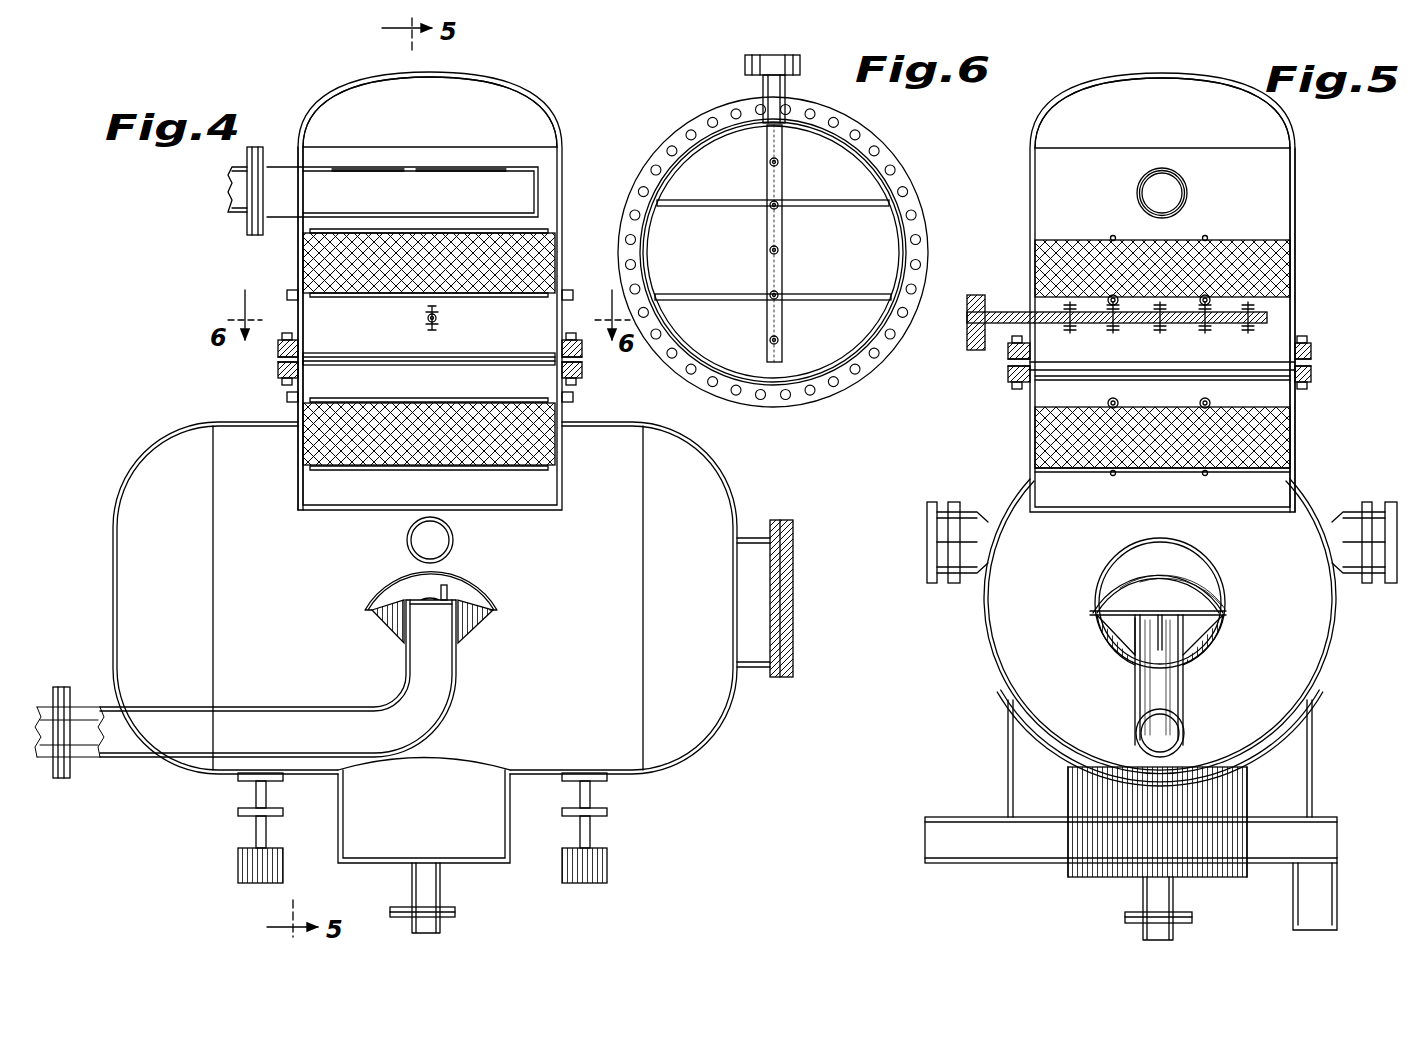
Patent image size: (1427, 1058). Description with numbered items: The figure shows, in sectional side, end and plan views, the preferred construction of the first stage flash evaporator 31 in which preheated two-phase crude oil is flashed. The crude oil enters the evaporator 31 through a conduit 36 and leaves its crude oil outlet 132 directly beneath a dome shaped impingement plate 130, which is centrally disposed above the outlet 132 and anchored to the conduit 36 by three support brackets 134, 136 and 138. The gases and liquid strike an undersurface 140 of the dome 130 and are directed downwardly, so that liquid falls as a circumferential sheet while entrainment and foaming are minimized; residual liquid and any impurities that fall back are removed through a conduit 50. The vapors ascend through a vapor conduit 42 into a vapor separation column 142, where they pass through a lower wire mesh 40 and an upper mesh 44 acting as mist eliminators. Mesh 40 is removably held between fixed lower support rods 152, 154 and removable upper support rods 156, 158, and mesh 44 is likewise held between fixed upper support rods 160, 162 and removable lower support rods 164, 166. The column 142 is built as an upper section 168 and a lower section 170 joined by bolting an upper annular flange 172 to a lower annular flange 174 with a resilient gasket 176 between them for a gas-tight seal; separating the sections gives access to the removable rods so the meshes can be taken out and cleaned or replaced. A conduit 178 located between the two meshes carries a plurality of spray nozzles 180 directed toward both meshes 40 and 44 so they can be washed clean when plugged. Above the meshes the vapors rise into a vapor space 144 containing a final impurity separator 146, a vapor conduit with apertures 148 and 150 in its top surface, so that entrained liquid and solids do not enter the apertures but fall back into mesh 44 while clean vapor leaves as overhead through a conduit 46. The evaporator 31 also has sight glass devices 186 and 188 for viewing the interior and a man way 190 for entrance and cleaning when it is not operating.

In FIG. 4, the first stage flash evaporator 31 is at (697, 774).
In FIG. 5, the first stage flash evaporator 31 is at (990, 666).
In FIG. 4, the conduit 36 is at (125, 760).
In FIG. 5, the conduit 36 is at (1135, 724).
In FIG. 4, the wire mesh 40 is at (320, 440).
In FIG. 5, the wire mesh 40 is at (1045, 440).
In FIG. 4, the vapor conduit 42 is at (545, 310).
In FIG. 5, the vapor conduit 42 is at (1040, 386).
In FIG. 4, the mesh 44 is at (535, 264).
In FIG. 5, the mesh 44 is at (1275, 252).
In FIG. 4, the conduit 46 is at (235, 215).
In FIG. 4, the conduit 50 is at (445, 926).
In FIG. 5, the conduit 50 is at (1145, 930).
In FIG. 4, the dome shaped impingement plate 130 is at (388, 598).
In FIG. 5, the dome shaped impingement plate 130 is at (1120, 596).
In FIG. 4, the crude oil outlet 132 is at (452, 590).
In FIG. 4, the support bracket 134 is at (382, 624).
In FIG. 5, the support bracket 134 is at (1155, 645).
In FIG. 4, the support bracket 136 is at (462, 618).
In FIG. 5, the support bracket 136 is at (1122, 626).
In FIG. 5, the support bracket 138 is at (1195, 645).
In FIG. 4, the undersurface 140 is at (437, 580).
In FIG. 4, the vapor separation column 142 is at (548, 98).
In FIG. 5, the vapor separation column 142 is at (1300, 138).
In FIG. 6, the vapor separation column 142 is at (707, 128).
In FIG. 4, the vapor space 144 is at (475, 80).
In FIG. 5, the vapor space 144 is at (1122, 98).
In FIG. 4, the final impurity separator 146 is at (295, 167).
In FIG. 5, the final impurity separator 146 is at (1138, 176).
In FIG. 4, the aperture 148 is at (370, 170).
In FIG. 5, the aperture 148 is at (1172, 170).
In FIG. 4, the aperture 150 is at (465, 170).
In FIG. 4, the fixed lower support rod 152 is at (548, 470).
In FIG. 5, the fixed lower support rod 152 is at (1113, 476).
In FIG. 5, the fixed lower support rod 154 is at (1205, 476).
In FIG. 4, the removable upper support rod 156 is at (570, 398).
In FIG. 5, the removable upper support rod 156 is at (1108, 400).
In FIG. 6, the removable upper support rod 156 is at (855, 205).
In FIG. 5, the removable upper support rod 158 is at (1210, 400).
In FIG. 6, the removable upper support rod 158 is at (872, 302).
In FIG. 4, the fixed upper support rod 160 is at (545, 231).
In FIG. 5, the fixed upper support rod 160 is at (1115, 236).
In FIG. 5, the fixed upper support rod 162 is at (1206, 236).
In FIG. 4, the removable lower support rod 164 is at (292, 300).
In FIG. 5, the removable lower support rod 164 is at (1108, 298).
In FIG. 5, the removable lower support rod 166 is at (1210, 300).
In FIG. 4, the upper section 168 is at (298, 230).
In FIG. 5, the upper section 168 is at (1300, 200).
In FIG. 6, the upper section 168 is at (748, 385).
In FIG. 4, the lower section 170 is at (575, 425).
In FIG. 5, the lower section 170 is at (1295, 444).
In FIG. 4, the upper annular flange 172 is at (276, 348).
In FIG. 5, the upper annular flange 172 is at (1312, 350).
In FIG. 6, the upper annular flange 172 is at (822, 388).
In FIG. 4, the lower annular flange 174 is at (278, 380).
In FIG. 5, the lower annular flange 174 is at (1312, 372).
In FIG. 4, the resilient gasket 176 is at (276, 365).
In FIG. 5, the resilient gasket 176 is at (1312, 362).
In FIG. 4, the conduit 178 is at (420, 318).
In FIG. 5, the conduit 178 is at (1258, 312).
In FIG. 6, the conduit 178 is at (782, 268).
In FIG. 4, the spray nozzles 180 is at (440, 318).
In FIG. 5, the spray nozzles 180 is at (1205, 335).
In FIG. 6, the spray nozzles 180 is at (768, 294).
In FIG. 4, the sight glass device 186 is at (440, 548).
In FIG. 5, the sight glass device 186 is at (927, 520).
In FIG. 5, the sight glass device 188 is at (1380, 590).
In FIG. 4, the man way 190 is at (795, 602).
In FIG. 5, the man way 190 is at (1215, 588).